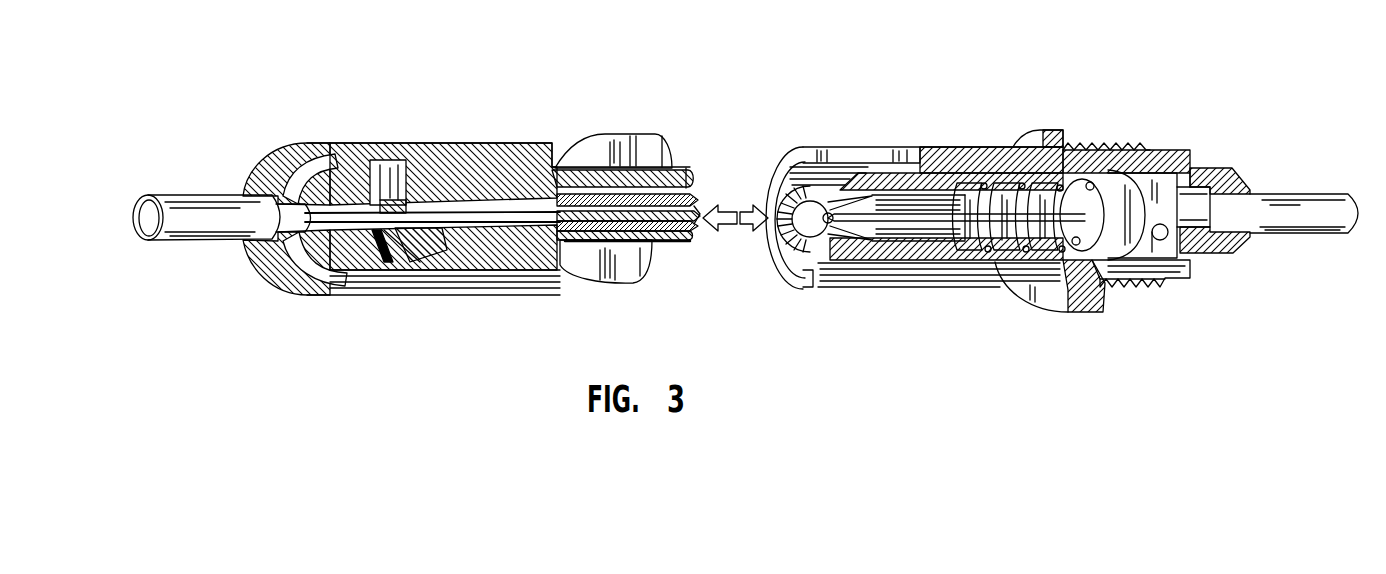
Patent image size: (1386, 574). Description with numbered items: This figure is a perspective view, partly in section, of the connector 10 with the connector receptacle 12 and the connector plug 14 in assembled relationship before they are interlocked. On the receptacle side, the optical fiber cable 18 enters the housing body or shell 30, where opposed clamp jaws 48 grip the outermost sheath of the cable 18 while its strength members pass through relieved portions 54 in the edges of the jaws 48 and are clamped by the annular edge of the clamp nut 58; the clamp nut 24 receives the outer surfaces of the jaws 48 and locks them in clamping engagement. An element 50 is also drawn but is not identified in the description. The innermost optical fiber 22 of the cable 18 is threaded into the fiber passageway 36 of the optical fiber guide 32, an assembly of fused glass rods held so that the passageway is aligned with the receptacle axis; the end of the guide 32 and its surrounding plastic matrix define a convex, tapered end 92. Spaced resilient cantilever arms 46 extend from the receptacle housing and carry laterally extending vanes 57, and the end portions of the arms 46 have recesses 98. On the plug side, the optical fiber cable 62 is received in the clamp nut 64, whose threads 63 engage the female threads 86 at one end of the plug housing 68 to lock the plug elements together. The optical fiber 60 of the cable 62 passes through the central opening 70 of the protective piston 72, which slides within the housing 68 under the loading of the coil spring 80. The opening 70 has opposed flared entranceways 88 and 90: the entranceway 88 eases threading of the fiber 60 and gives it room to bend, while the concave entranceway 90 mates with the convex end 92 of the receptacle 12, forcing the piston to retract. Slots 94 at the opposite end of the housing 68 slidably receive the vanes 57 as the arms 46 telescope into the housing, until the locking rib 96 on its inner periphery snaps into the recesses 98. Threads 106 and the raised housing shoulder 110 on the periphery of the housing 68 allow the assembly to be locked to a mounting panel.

The connector 10 is at (927, 66).
The connector receptacle 12 is at (538, 112).
The connector plug 14 is at (1107, 292).
The optical fiber cable 18 is at (196, 197).
The optical fiber 22 is at (562, 282).
The clamp nut 24 is at (261, 168).
The housing body or shell 30 is at (553, 150).
The optical fiber guide 32 is at (701, 205).
The fiber passageway 36 is at (657, 216).
The cantilever arms 46 is at (665, 170).
The clamp jaws 48 is at (330, 178).
The collar 50 is at (410, 178).
The relieved portions 54 is at (378, 262).
The vanes 57 is at (645, 168).
The clamp nut 58 is at (440, 247).
The optical fiber 60 is at (945, 240).
The optical fiber cable 62 is at (1296, 194).
The threads 63 is at (1164, 242).
The clamp nut 64 is at (1226, 168).
The connector plug housing 68 is at (1074, 296).
The central opening 70 is at (818, 240).
The protective piston 72 is at (965, 250).
The coil spring 80 is at (1090, 145).
The female threads 86 is at (1197, 170).
The flared entranceway 88 is at (893, 262).
The flared entranceway 90 is at (813, 238).
The convex end 92 is at (683, 228).
The slots 94 is at (885, 152).
The locking rib 96 is at (945, 160).
The recesses 98 is at (700, 180).
The threads 106 is at (1133, 148).
The raised housing shoulder 110 is at (1047, 133).